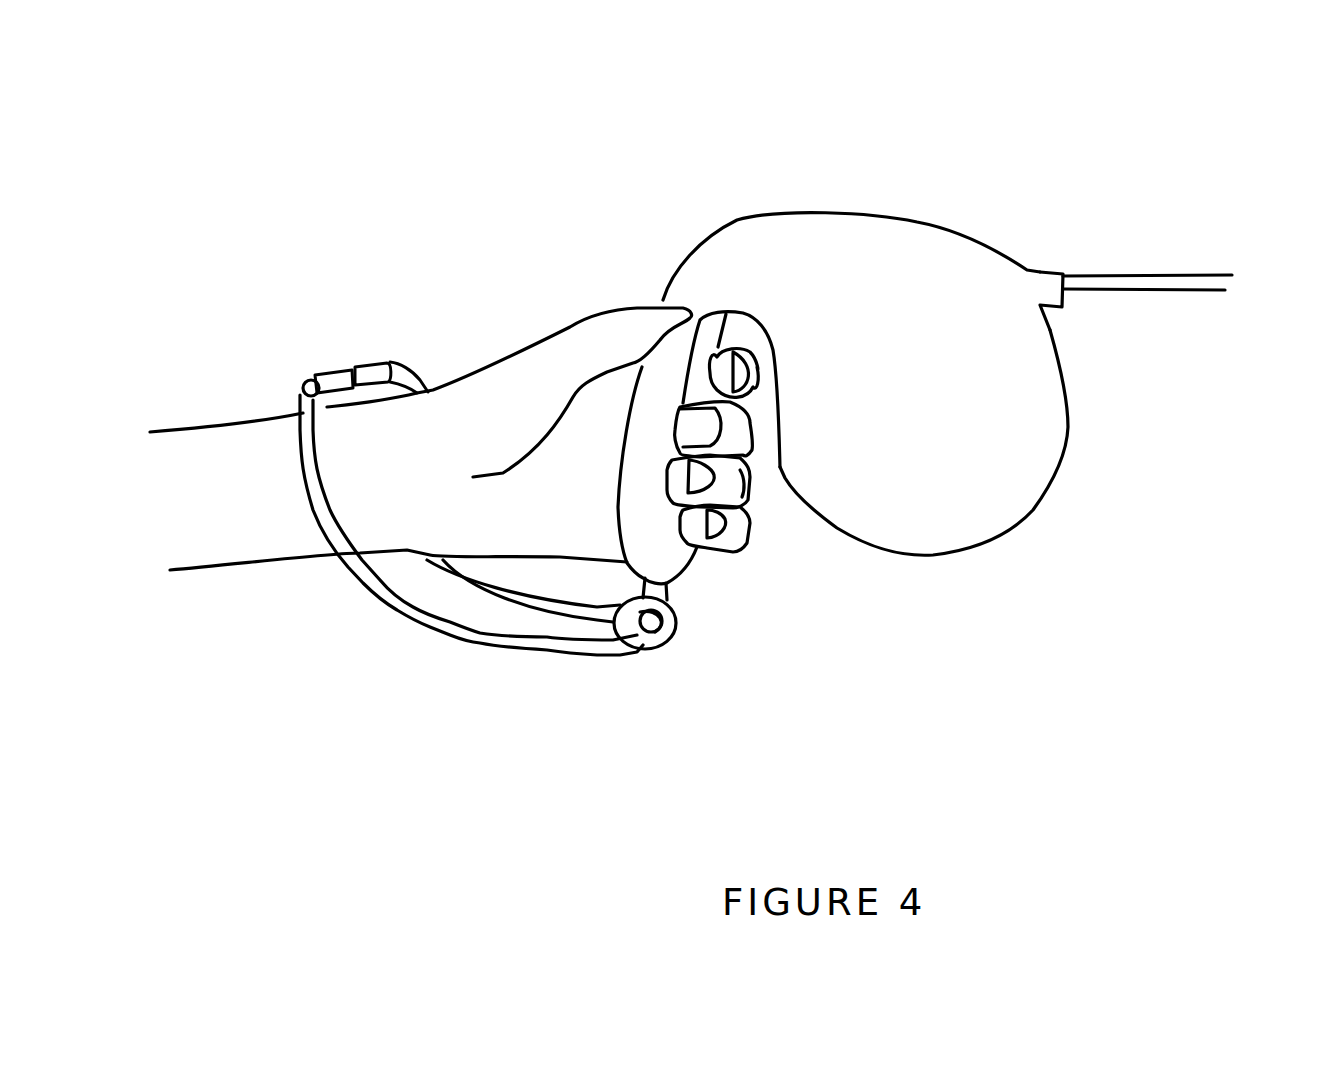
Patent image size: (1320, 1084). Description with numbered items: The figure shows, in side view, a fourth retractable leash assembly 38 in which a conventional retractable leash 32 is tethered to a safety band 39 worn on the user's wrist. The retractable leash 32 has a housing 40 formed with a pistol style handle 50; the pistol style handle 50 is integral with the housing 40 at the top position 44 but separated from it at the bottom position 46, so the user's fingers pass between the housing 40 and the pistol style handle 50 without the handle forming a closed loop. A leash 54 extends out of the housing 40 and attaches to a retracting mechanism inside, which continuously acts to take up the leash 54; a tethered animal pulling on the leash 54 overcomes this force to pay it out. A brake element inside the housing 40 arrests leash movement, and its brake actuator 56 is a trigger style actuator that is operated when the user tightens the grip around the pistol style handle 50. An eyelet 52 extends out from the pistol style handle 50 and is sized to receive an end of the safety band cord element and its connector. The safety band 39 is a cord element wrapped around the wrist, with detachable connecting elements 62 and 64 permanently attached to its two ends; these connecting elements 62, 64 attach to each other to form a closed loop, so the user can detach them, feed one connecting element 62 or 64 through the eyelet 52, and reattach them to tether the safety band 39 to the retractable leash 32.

The retractable leash 32 is at (953, 330).
The fourth retractable leash assembly 38 is at (473, 549).
The safety band 39 is at (373, 578).
The housing 40 is at (868, 405).
The top position 44 is at (740, 275).
The bottom position 46 is at (800, 502).
The pistol style handle 50 is at (667, 537).
The eyelet 52 is at (667, 640).
The leash 54 is at (1165, 273).
The brake actuator 56 is at (713, 333).
The detachable connecting element 62 is at (367, 368).
The detachable connecting element 64 is at (328, 375).